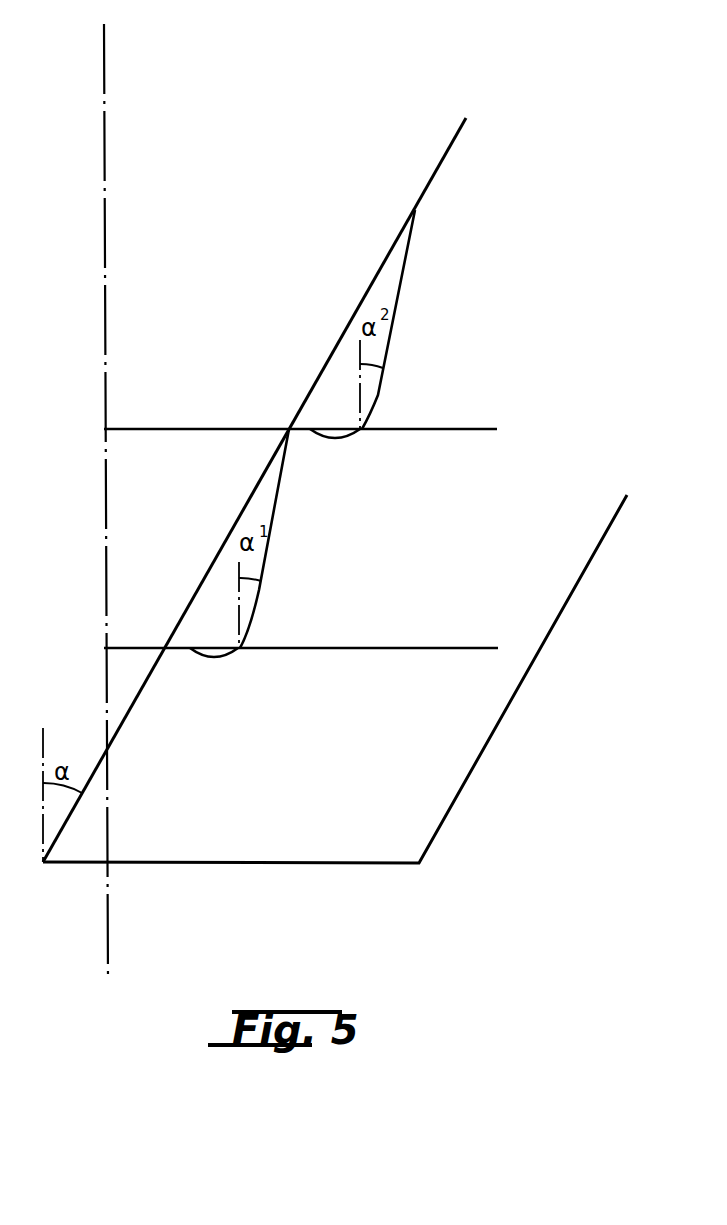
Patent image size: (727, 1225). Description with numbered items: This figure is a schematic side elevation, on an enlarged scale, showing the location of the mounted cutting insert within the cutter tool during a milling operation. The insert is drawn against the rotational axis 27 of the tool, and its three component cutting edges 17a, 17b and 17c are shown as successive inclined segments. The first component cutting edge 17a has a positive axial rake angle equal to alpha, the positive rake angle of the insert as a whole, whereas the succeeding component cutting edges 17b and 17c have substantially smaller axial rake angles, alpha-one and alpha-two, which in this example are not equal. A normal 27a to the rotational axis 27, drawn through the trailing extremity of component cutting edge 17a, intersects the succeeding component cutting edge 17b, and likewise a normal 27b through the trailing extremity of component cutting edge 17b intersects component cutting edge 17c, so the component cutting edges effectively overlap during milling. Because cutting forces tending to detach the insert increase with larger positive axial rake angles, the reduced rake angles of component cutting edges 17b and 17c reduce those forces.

The rotational axis 27 is at (104, 61).
The normal 27a is at (346, 648).
The normal 27b is at (428, 429).
The component cutting edge 17a is at (102, 763).
The component cutting edge 17b is at (275, 495).
The component cutting edge 17c is at (398, 272).